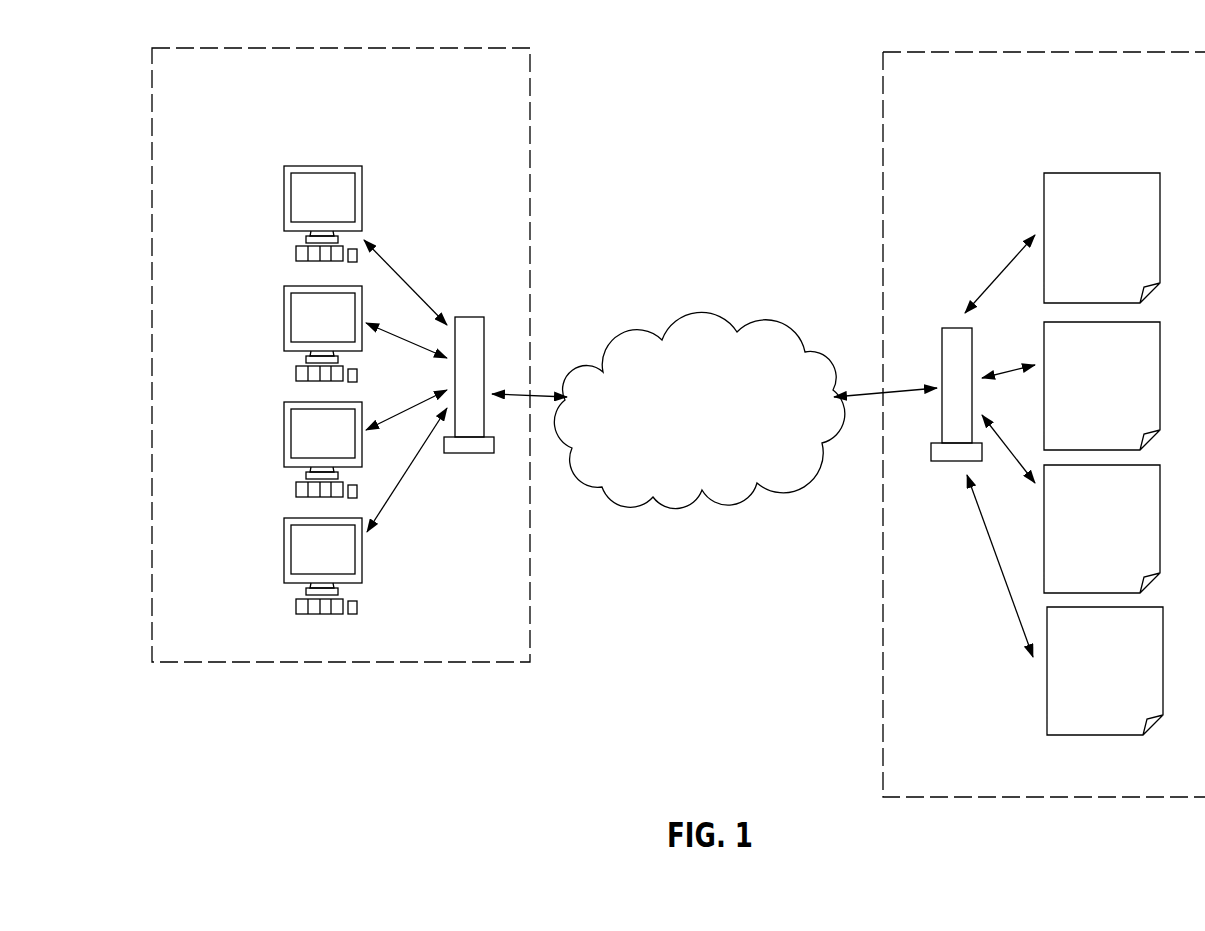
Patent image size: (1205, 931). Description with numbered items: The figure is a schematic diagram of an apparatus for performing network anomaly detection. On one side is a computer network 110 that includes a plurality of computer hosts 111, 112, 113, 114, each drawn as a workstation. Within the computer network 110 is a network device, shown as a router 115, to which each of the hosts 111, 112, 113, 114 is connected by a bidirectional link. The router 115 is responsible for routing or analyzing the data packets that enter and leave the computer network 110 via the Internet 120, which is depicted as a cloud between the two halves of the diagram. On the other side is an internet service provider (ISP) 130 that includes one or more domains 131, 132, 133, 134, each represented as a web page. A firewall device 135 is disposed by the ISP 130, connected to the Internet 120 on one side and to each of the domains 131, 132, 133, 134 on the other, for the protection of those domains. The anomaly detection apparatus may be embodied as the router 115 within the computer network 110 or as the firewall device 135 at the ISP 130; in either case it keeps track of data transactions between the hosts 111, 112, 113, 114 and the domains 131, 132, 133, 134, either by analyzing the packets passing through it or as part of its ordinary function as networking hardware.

The computer network 110 is at (305, 126).
The computer host 111 is at (283, 203).
The computer host 112 is at (283, 320).
The computer host 113 is at (283, 437).
The computer host 114 is at (283, 553).
The router 115 is at (477, 317).
The Internet 120 is at (685, 441).
The internet service provider (ISP) 130 is at (1022, 127).
The domain 131 is at (1082, 263).
The domain 132 is at (1082, 424).
The domain 133 is at (1082, 561).
The domain 134 is at (1085, 701).
The firewall device 135 is at (952, 328).